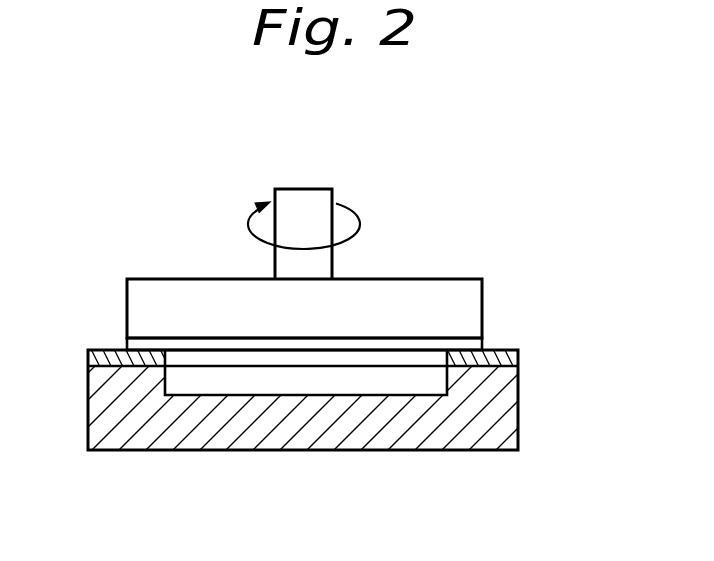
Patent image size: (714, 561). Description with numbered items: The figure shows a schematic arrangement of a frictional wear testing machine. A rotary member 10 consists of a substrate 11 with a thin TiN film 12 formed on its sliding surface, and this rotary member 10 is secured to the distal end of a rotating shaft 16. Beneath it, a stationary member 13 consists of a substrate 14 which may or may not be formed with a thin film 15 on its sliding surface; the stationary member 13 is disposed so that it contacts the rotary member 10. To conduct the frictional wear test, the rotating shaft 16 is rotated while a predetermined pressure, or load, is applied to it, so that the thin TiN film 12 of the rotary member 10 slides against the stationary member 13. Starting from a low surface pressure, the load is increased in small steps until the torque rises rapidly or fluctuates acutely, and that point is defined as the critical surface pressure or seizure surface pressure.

The rotary member 10 is at (351, 264).
The substrate 11 is at (465, 303).
The thin TiN film 12 is at (473, 345).
The stationary member 13 is at (311, 434).
The substrate 14 is at (510, 422).
The thin film 15 is at (510, 358).
The rotating shaft 16 is at (318, 197).